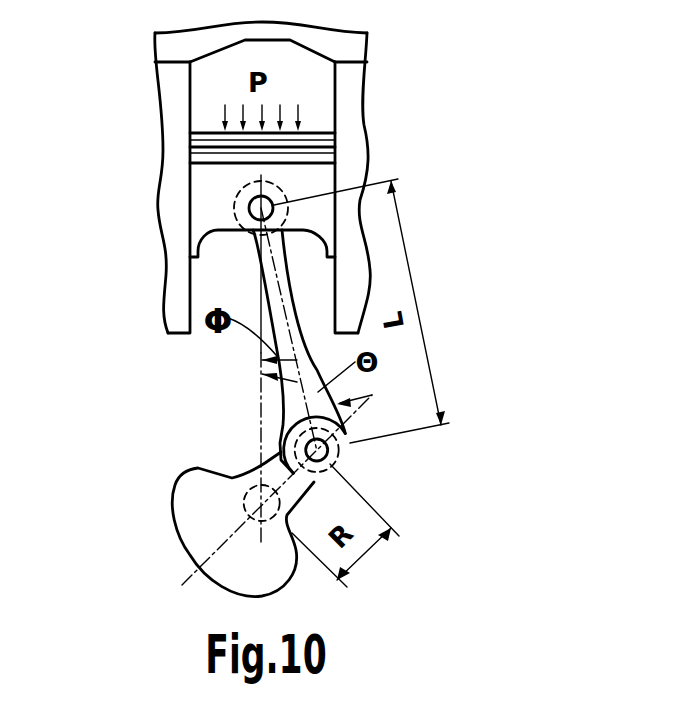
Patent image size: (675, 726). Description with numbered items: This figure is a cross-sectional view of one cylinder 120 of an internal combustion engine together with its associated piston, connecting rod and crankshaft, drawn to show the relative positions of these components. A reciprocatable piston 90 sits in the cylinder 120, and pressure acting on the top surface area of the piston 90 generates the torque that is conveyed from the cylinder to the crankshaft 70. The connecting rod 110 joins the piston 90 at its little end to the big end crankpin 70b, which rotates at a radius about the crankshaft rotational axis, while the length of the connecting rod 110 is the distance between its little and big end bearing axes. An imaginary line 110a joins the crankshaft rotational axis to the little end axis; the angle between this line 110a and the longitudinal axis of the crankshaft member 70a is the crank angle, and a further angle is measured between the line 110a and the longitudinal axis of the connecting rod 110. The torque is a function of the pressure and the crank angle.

The cylinder 120 is at (327, 87).
The piston 90 is at (202, 198).
The connecting rod 110 is at (290, 392).
The imaginary line 110a is at (262, 408).
The crankshaft member 70a is at (258, 468).
The crankshaft 70 is at (182, 499).
The big end crankpin 70b is at (346, 458).